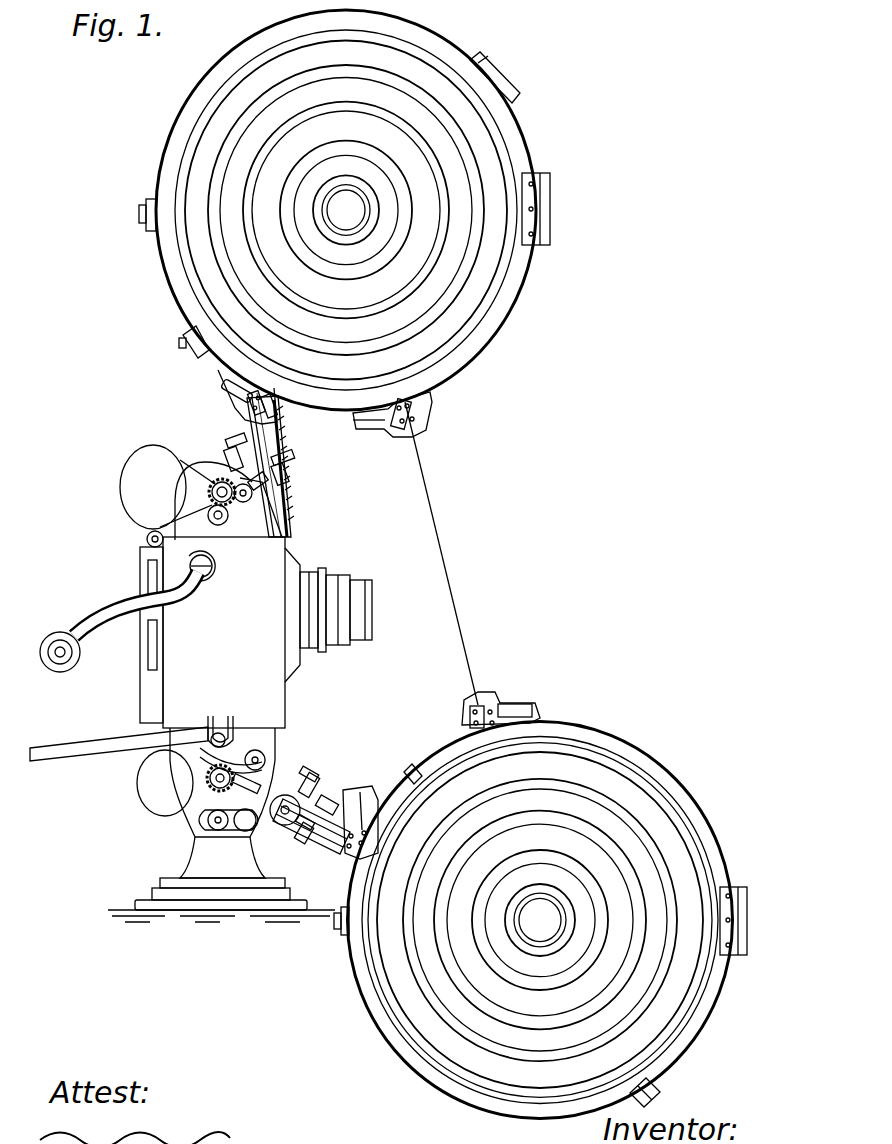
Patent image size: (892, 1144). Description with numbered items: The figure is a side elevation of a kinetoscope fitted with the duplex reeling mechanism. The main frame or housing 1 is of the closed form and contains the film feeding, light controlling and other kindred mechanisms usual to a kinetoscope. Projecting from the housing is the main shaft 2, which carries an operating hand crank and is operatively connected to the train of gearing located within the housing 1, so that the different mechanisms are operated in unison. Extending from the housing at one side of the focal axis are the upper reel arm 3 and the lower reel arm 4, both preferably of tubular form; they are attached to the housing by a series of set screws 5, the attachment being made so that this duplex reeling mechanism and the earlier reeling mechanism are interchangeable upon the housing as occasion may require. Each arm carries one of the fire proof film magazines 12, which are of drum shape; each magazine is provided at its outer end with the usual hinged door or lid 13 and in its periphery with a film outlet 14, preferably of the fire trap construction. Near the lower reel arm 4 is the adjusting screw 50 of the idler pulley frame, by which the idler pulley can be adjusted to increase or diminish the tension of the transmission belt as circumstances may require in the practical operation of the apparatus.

The main frame or housing 1 is at (286, 692).
The main shaft 2 is at (213, 565).
The upper reel arm 3 is at (287, 440).
The lower reel arm 4 is at (310, 841).
The set screws 5 is at (296, 460).
The adjusting screw 50 is at (334, 800).
The fire proof film magazines 12 is at (530, 274).
The hinged door or lid 13 is at (444, 565).
The film outlet 14 is at (229, 401).